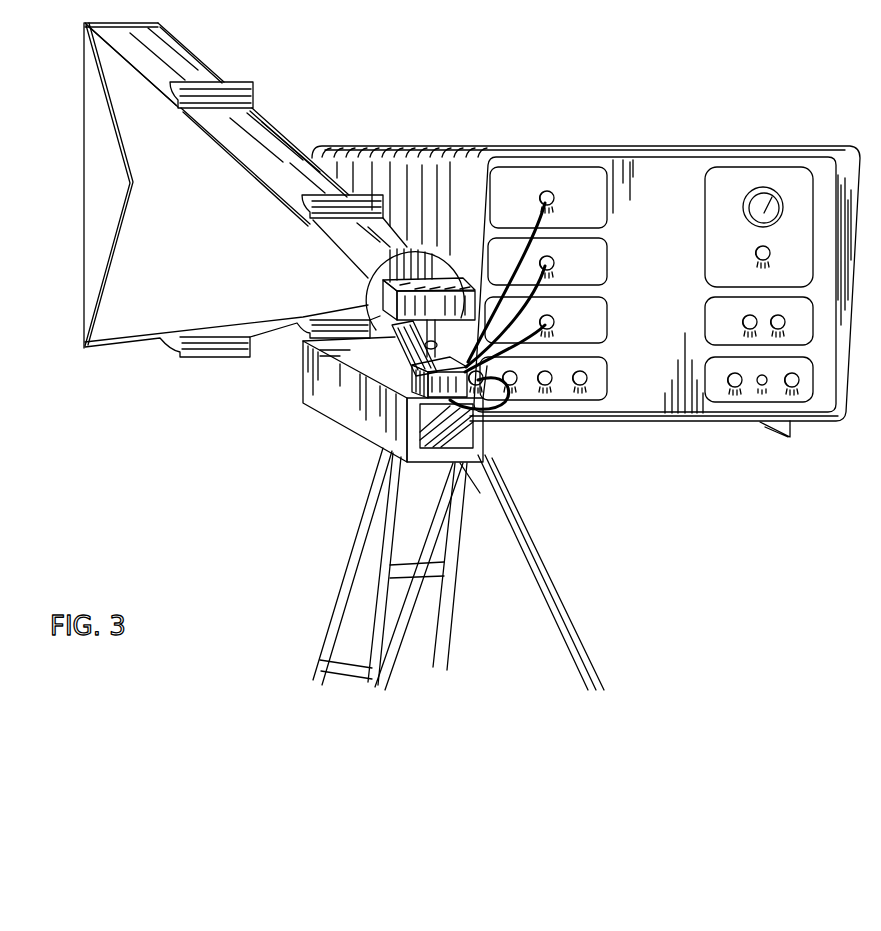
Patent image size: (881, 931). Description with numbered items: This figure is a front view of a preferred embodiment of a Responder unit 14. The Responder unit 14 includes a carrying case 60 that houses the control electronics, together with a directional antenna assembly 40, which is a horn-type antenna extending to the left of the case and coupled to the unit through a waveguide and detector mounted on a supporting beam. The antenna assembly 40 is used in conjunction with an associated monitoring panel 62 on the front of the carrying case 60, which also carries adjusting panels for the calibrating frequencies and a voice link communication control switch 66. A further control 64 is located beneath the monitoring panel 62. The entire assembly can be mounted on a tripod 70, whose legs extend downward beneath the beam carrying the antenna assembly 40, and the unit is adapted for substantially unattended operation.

The Responder unit 14 is at (150, 503).
The directional antenna assembly 40 is at (210, 69).
The carrying case 60 is at (617, 145).
The monitoring panel 62 is at (753, 220).
The control knob 64 is at (772, 257).
The voice link communication control switch 66 is at (596, 382).
The tripod 70 is at (536, 547).